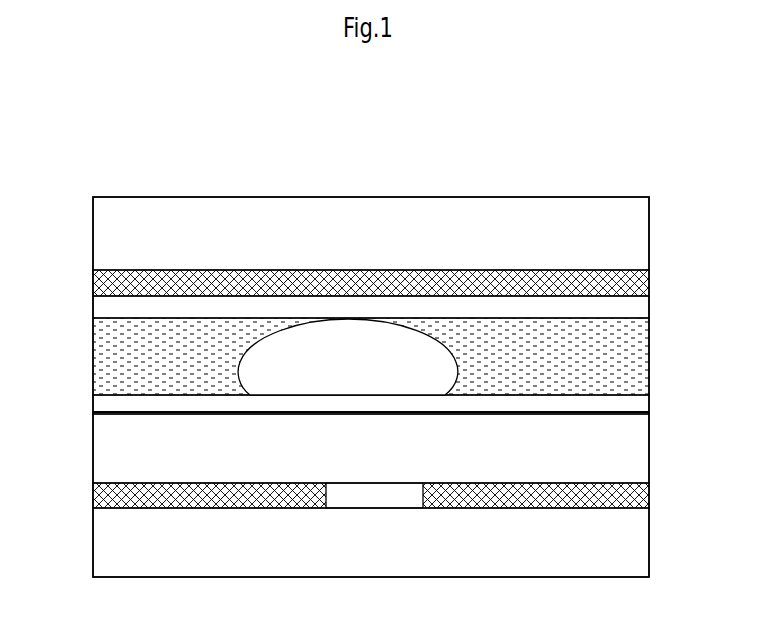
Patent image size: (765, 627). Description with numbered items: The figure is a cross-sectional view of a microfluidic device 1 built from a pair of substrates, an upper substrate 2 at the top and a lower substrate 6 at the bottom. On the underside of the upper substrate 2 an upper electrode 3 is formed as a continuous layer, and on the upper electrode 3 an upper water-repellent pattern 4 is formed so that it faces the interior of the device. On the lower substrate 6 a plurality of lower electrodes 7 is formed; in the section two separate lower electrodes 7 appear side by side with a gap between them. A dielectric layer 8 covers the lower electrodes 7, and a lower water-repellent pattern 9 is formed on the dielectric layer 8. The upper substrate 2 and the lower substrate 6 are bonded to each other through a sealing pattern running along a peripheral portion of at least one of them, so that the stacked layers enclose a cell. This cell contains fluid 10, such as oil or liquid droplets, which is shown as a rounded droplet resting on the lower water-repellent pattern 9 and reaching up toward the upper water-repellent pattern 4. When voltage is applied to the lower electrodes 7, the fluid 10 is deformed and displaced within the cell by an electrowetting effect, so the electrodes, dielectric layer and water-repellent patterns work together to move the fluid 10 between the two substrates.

The microfluidic device 1 is at (660, 152).
The upper substrate 2 is at (98, 232).
The upper electrode 3 is at (590, 284).
The upper water-repellent pattern 4 is at (453, 308).
The fluid 10 is at (272, 353).
The lower water-repellent pattern 9 is at (98, 402).
The dielectric layer 8 is at (633, 448).
The lower electrodes 7 is at (236, 486).
The lower substrate 6 is at (633, 541).